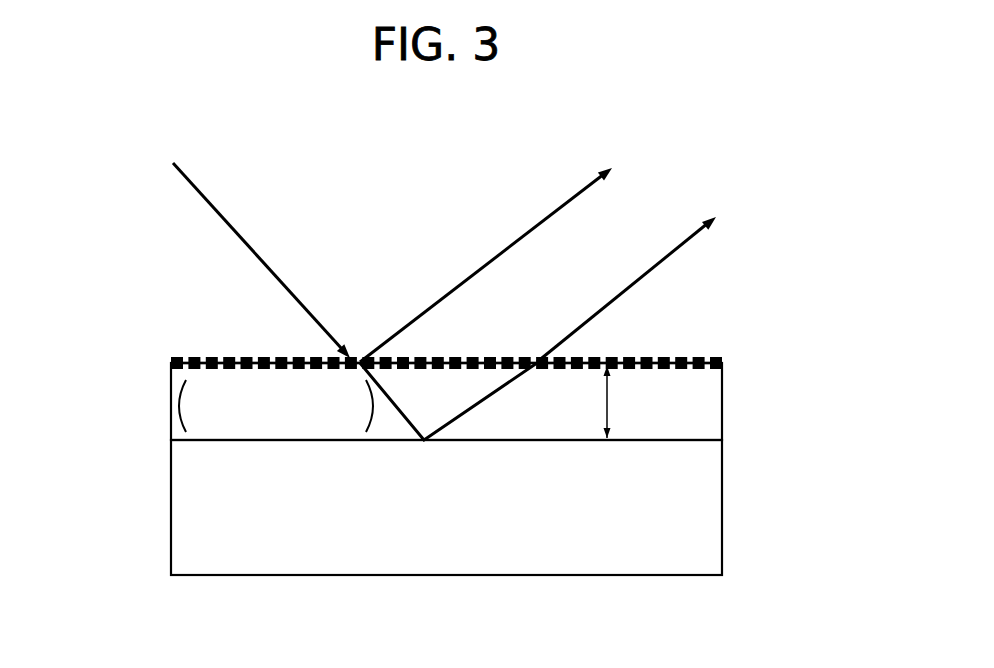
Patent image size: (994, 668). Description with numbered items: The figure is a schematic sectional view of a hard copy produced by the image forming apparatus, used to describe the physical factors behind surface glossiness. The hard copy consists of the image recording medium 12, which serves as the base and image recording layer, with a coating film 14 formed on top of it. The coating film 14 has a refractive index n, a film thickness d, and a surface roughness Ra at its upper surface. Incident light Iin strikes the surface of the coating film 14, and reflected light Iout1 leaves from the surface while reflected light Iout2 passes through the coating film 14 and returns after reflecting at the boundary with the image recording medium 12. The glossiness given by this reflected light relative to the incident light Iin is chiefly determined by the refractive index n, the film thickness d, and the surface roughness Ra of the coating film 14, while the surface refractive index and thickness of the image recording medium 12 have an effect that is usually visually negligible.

The image recording medium 12 is at (171, 510).
The coating film 14 is at (397, 352).
The surface roughness Ra is at (204, 350).
The film thickness d is at (618, 402).
The incident light Iin is at (248, 245).
The reflected light Iout1 is at (529, 257).
The reflected light Iout2 is at (581, 321).